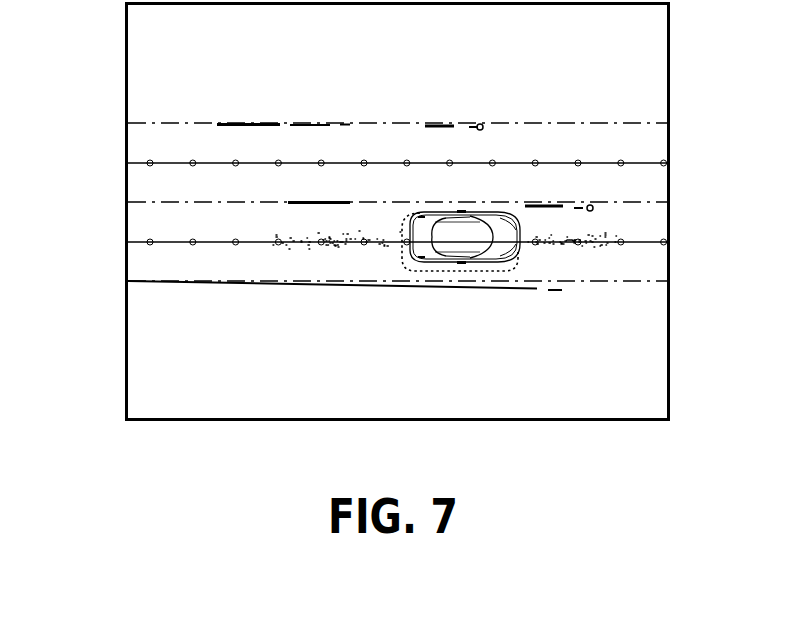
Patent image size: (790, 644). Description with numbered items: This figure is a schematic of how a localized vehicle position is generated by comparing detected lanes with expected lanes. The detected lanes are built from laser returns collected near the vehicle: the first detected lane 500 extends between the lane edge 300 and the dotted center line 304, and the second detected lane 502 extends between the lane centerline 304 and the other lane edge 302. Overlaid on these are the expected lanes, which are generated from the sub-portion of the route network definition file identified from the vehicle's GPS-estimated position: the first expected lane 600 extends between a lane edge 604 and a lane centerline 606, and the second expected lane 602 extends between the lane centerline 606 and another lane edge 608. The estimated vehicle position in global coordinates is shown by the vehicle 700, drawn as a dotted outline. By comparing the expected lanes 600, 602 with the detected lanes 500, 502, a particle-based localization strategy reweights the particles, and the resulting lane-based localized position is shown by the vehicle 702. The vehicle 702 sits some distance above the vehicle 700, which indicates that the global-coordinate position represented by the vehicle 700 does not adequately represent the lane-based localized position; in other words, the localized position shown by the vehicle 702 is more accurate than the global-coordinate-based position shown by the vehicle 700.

The lane edge 300 is at (446, 124).
The lane edge 302 is at (536, 296).
The dotted center line 304 is at (575, 213).
The first detected lane 500 is at (150, 148).
The second detected lane 502 is at (150, 227).
The first expected lane 600 is at (150, 190).
The second expected lane 602 is at (148, 264).
The lane edge 604 is at (635, 118).
The lane centerline 606 is at (634, 196).
The lane edge 608 is at (643, 290).
The vehicle 700 is at (421, 272).
The vehicle 702 is at (521, 229).